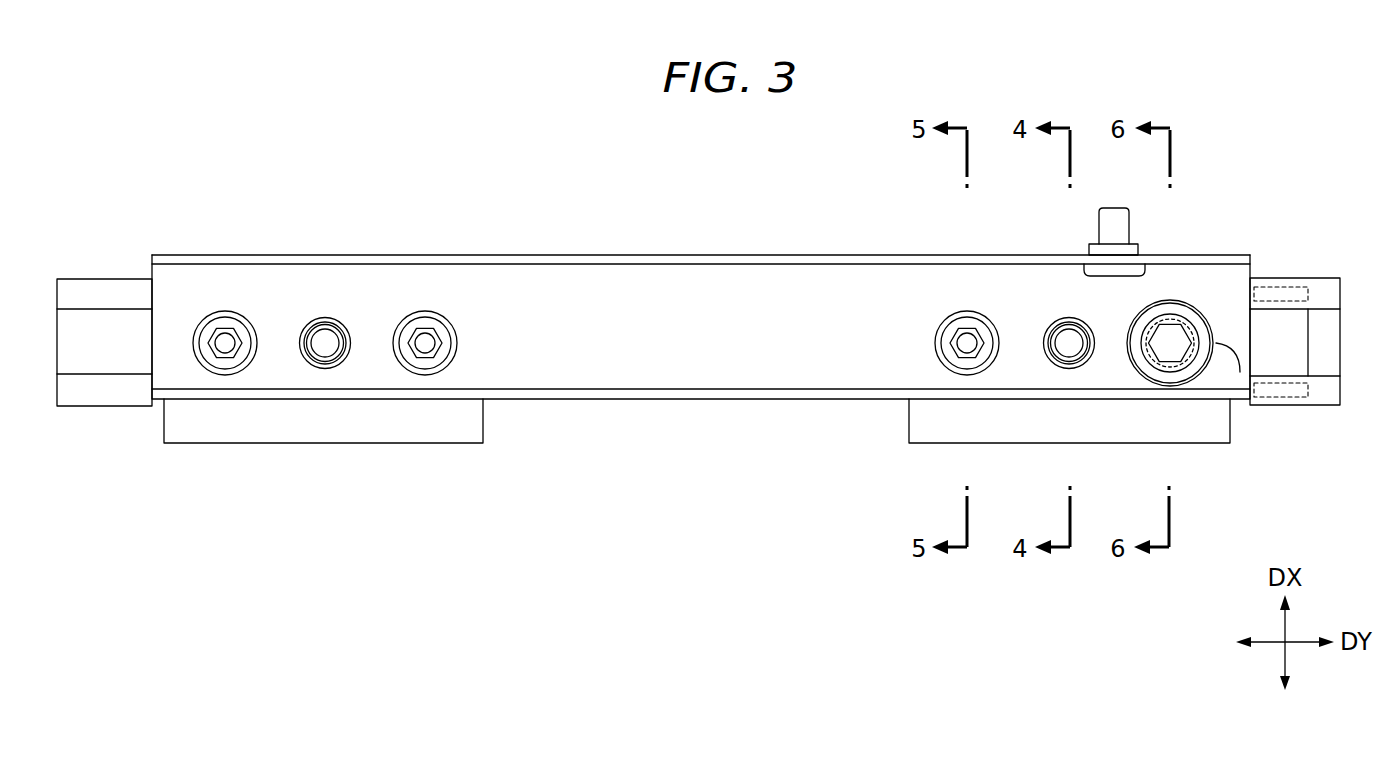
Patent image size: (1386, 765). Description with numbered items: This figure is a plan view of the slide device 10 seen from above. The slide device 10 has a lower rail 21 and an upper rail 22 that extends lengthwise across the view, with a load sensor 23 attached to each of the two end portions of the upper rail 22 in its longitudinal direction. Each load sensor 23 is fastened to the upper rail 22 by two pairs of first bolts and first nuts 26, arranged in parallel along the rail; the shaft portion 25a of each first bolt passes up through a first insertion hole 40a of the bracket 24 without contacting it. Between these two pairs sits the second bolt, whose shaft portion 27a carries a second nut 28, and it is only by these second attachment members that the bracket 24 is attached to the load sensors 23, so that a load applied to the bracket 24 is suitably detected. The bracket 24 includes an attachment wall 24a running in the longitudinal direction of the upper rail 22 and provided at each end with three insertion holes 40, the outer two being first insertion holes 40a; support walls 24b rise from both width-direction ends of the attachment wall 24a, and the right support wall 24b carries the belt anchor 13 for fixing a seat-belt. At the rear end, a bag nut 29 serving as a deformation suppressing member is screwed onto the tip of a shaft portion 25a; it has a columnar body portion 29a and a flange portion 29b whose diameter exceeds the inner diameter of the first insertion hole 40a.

The slide device 10 is at (1223, 228).
The belt anchor 13 is at (1114, 207).
The lower rail 21 is at (80, 279).
The upper rail 22 is at (1309, 339).
The load sensor 23 is at (172, 444).
The bracket 24 is at (610, 277).
The attachment wall 24a is at (548, 307).
The support wall 24b is at (690, 255).
The shaft portion 25a is at (214, 366).
The first nut 26 is at (229, 362).
The shaft portion 27a is at (312, 364).
The second nut 28 is at (330, 366).
The bag nut 29 is at (1162, 372).
The body portion 29a is at (1171, 364).
The flange portion 29b is at (1216, 343).
The insertion hole 40 is at (232, 322).
The first insertion hole 40a is at (583, 287).